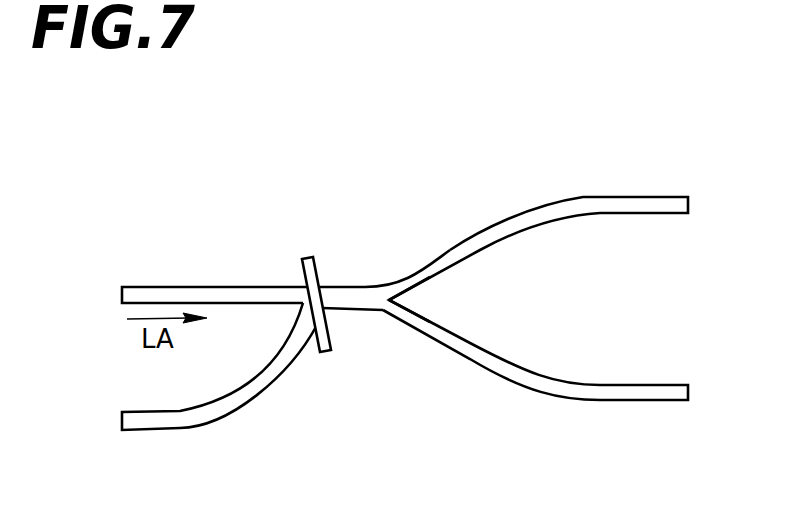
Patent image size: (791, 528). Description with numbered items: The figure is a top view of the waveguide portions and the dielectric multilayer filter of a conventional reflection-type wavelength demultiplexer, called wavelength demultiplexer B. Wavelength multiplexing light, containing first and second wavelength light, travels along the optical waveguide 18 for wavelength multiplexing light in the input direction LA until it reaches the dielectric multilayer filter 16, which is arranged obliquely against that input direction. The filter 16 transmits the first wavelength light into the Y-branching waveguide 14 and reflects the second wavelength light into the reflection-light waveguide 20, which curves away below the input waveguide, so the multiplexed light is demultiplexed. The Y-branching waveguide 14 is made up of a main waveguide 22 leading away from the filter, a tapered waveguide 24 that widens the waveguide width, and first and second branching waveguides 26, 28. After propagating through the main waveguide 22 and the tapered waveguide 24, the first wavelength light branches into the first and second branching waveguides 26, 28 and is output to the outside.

The Y-branching waveguide 14 is at (712, 107).
The dielectric multilayer filter 16 is at (308, 257).
The optical waveguide for wavelength multiplexing light 18 is at (163, 287).
The reflection-light waveguide 20 is at (236, 414).
The main waveguide 22 is at (342, 285).
The tapered waveguide 24 is at (388, 282).
The first branching waveguide 26 is at (548, 197).
The second branching waveguide 28 is at (647, 385).